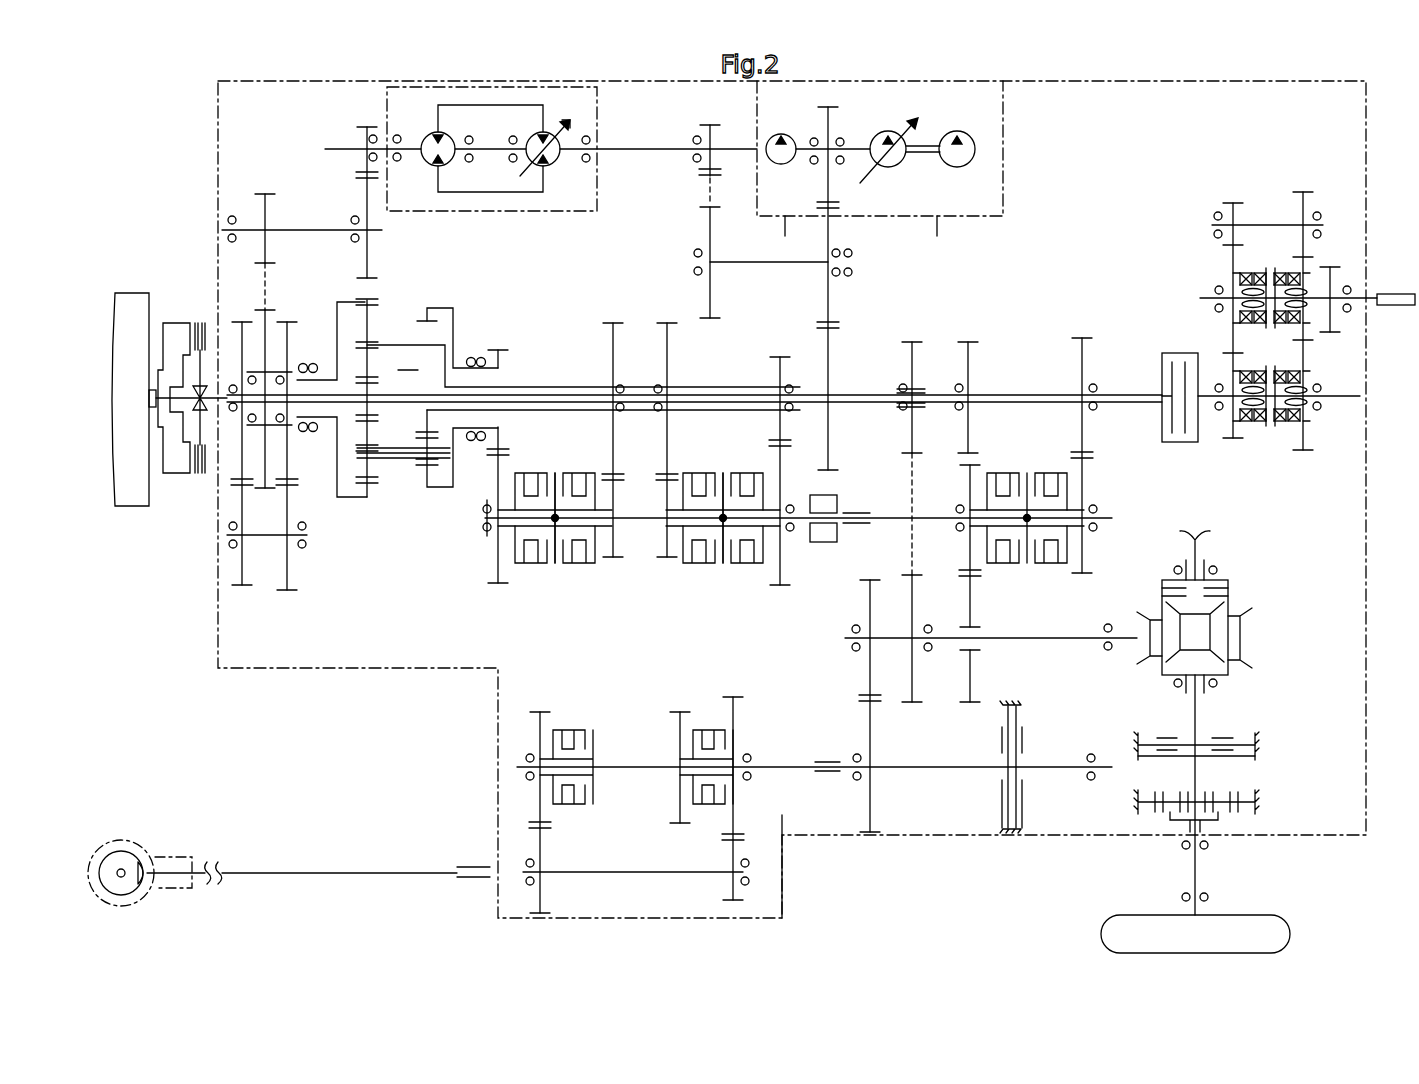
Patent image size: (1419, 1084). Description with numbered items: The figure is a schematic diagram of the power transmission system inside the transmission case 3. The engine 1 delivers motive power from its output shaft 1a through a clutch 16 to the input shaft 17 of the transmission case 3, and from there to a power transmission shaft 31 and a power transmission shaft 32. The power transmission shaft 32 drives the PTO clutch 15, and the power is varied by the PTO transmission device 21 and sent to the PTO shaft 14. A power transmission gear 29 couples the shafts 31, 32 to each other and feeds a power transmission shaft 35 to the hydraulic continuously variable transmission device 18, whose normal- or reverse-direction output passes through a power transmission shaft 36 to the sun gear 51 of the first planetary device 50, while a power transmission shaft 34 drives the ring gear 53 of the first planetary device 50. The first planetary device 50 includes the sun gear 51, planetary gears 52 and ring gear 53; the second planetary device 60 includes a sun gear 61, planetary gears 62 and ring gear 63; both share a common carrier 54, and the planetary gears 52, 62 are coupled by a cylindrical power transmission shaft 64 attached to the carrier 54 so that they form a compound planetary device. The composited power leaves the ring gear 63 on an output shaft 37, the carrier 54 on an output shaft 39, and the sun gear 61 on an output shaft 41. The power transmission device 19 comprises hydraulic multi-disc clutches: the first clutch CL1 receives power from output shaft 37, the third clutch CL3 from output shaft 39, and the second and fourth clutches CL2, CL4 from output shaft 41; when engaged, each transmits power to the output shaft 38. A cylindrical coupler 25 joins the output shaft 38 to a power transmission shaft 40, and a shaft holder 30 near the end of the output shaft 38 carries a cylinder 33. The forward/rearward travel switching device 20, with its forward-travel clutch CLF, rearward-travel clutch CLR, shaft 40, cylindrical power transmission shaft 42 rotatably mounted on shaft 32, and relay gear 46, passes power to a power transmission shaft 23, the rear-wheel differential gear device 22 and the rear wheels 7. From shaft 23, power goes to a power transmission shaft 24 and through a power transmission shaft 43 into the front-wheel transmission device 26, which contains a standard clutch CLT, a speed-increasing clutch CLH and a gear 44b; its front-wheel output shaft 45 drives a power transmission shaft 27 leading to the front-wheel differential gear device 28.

The engine 1 is at (131, 500).
The output shaft 1a is at (149, 398).
The transmission case 3 is at (218, 100).
The rear wheels 7 is at (1290, 935).
The PTO shaft 14 is at (1397, 294).
The PTO clutch 15 is at (1190, 443).
The clutch 16 is at (173, 328).
The input shaft 17 is at (224, 392).
The continuously variable transmission device 18 is at (598, 99).
The power transmission device 19 is at (663, 606).
The forward/rearward travel switching device 20 is at (1055, 307).
The PTO transmission device 21 is at (1275, 447).
The rear-wheel differential gear device 22 is at (1262, 630).
The power transmission shaft 23 is at (1067, 641).
The power transmission shaft 24 is at (902, 769).
The cylindrical coupler 25 is at (858, 511).
The front-wheel transmission device 26 is at (633, 714).
The power transmission shaft 27 is at (309, 872).
The front-wheel differential gear device 28 is at (133, 840).
The power transmission gear 29 is at (835, 437).
The shaft holder 30 is at (825, 542).
The power transmission shaft 31 is at (728, 393).
The power transmission shaft 32 is at (1140, 395).
The cylinder 33 is at (866, 580).
The power transmission shaft 34 is at (268, 538).
The power transmission shaft 35 is at (765, 262).
The power transmission shaft 36 is at (311, 228).
The output shaft 37 is at (480, 356).
The output shaft 38 is at (803, 514).
The output shaft 39 is at (578, 380).
The power transmission shaft 40 is at (890, 520).
The output shaft 41 is at (750, 412).
The cylindrical power transmission shaft 42 is at (940, 390).
The power transmission shaft 43 is at (773, 763).
The gear 44b is at (735, 810).
The front-wheel output shaft 45 is at (660, 874).
The relay gear 46 is at (968, 680).
The first planetary device 50 is at (348, 503).
The sun gear 51 is at (378, 388).
The planetary gears 52 is at (357, 471).
The ring gear 53 is at (371, 305).
The carrier 54 is at (386, 345).
The second planetary device 60 is at (440, 491).
The sun gear 61 is at (427, 430).
The planetary gears 62 is at (448, 462).
The ring gear 63 is at (443, 308).
The cylindrical power transmission shaft 64 is at (395, 465).
The first clutch CL1 is at (533, 566).
The second clutch CL2 is at (752, 566).
The third clutch CL3 is at (578, 566).
The fourth clutch CL4 is at (700, 566).
The rearward-travel clutch CLR is at (1023, 470).
The forward-travel clutch CLF is at (1052, 566).
The speed-increasing clutch CLH is at (708, 728).
The standard clutch CLT is at (578, 806).